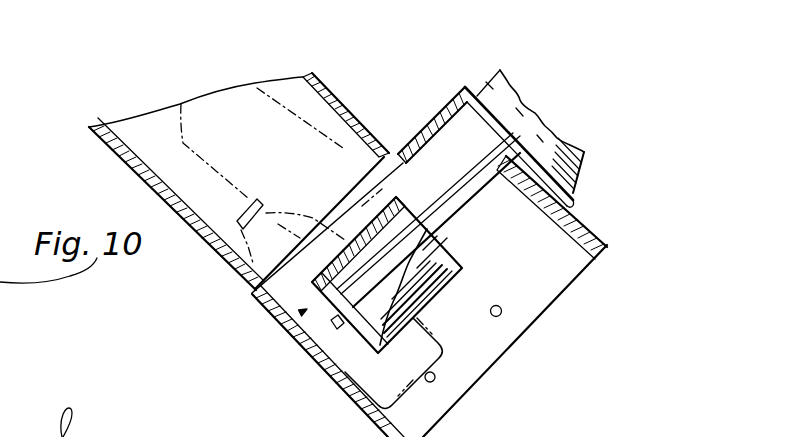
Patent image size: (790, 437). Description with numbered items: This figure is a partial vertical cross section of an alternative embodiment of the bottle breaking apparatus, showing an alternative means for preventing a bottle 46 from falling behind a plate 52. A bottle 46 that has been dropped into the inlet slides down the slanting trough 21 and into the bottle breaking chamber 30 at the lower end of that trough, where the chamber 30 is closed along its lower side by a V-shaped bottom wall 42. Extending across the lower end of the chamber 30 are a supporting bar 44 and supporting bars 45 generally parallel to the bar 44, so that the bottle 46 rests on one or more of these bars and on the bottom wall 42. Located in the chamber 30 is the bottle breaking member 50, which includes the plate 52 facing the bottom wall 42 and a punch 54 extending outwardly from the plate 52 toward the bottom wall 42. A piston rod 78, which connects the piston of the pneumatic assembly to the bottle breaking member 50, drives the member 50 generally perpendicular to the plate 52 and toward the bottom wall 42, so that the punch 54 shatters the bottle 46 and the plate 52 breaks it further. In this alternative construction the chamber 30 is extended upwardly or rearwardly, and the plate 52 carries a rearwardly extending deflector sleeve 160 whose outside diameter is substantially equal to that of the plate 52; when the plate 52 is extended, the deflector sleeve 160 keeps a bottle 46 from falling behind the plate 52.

The trough 21 is at (212, 258).
The bottle 46 is at (295, 115).
The bottle breaking chamber 30 is at (527, 276).
The bottom wall 42 is at (352, 402).
The bottle breaking member 50 is at (302, 313).
The piston rod 78 is at (488, 168).
The deflector sleeve 160 is at (448, 284).
The plate 52 is at (362, 336).
The punch 54 is at (333, 324).
The supporting bar 44 is at (436, 380).
The supporting bars 45 is at (502, 313).